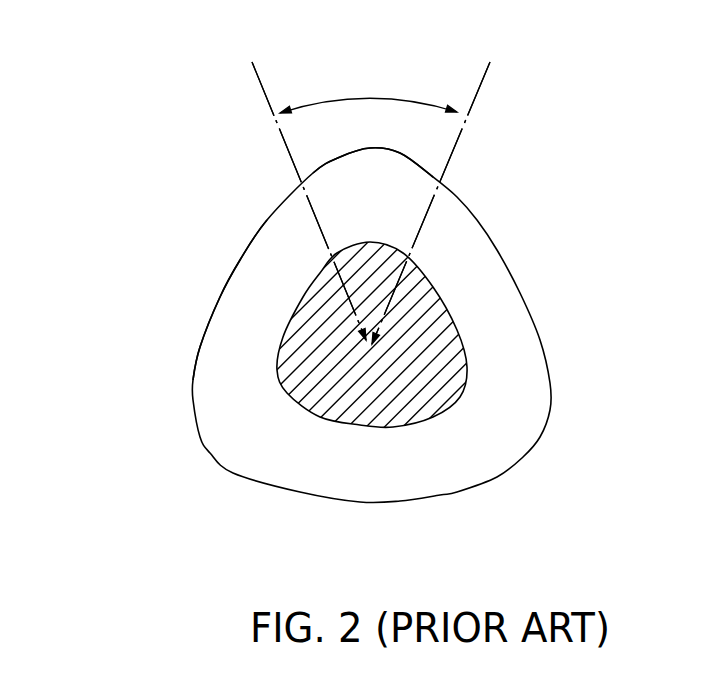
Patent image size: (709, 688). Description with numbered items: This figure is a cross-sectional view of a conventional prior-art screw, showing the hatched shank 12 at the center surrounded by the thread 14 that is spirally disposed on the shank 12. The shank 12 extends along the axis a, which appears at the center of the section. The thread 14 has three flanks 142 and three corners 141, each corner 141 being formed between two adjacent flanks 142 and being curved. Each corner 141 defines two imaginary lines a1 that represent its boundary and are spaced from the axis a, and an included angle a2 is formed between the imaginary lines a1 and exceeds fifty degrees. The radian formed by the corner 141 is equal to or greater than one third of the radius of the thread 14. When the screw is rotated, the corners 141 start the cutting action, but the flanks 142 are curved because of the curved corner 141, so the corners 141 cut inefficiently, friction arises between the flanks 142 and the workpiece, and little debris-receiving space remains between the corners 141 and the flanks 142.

The shank 12 is at (300, 387).
The thread 14 is at (502, 350).
The corner 141 is at (370, 148).
The flank 142 is at (220, 297).
The axis a is at (358, 335).
The imaginary line a1 is at (371, 187).
The included angle a2 is at (368, 88).